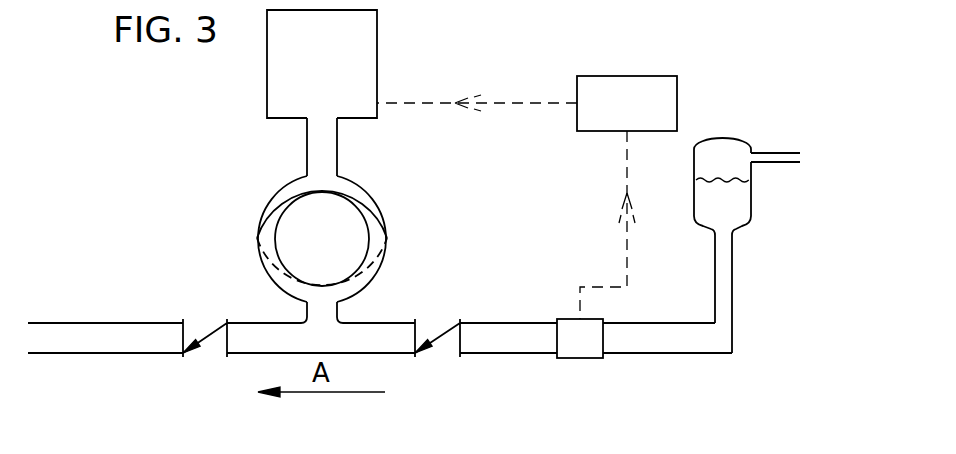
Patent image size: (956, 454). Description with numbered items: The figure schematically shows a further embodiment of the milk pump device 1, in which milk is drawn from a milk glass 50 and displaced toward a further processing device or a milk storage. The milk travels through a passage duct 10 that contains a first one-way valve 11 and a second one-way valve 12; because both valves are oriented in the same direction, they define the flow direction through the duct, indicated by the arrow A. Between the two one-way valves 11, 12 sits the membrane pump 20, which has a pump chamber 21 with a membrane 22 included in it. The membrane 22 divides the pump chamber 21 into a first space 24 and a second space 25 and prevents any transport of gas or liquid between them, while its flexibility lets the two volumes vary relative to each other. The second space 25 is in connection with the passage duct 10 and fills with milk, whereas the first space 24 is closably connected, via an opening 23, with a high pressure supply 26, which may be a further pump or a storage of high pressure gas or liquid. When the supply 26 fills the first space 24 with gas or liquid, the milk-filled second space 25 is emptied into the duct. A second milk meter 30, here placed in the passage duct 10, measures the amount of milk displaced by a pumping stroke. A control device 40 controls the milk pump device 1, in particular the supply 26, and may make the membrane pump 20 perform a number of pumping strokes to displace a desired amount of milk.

The milk pump device 1 is at (240, 183).
The passage duct 10 is at (378, 359).
The first one-way valve 11 is at (438, 326).
The second one-way valve 12 is at (199, 329).
The membrane pump 20 is at (355, 196).
The pump chamber 21 is at (377, 270).
The membrane 22 is at (364, 222).
The opening 23 is at (322, 150).
The first space 24 is at (291, 194).
The second space 25 is at (282, 278).
The supply 26 is at (360, 43).
The second milk meter 30 is at (592, 327).
The control device 40 is at (627, 77).
The milk glass 50 is at (750, 203).